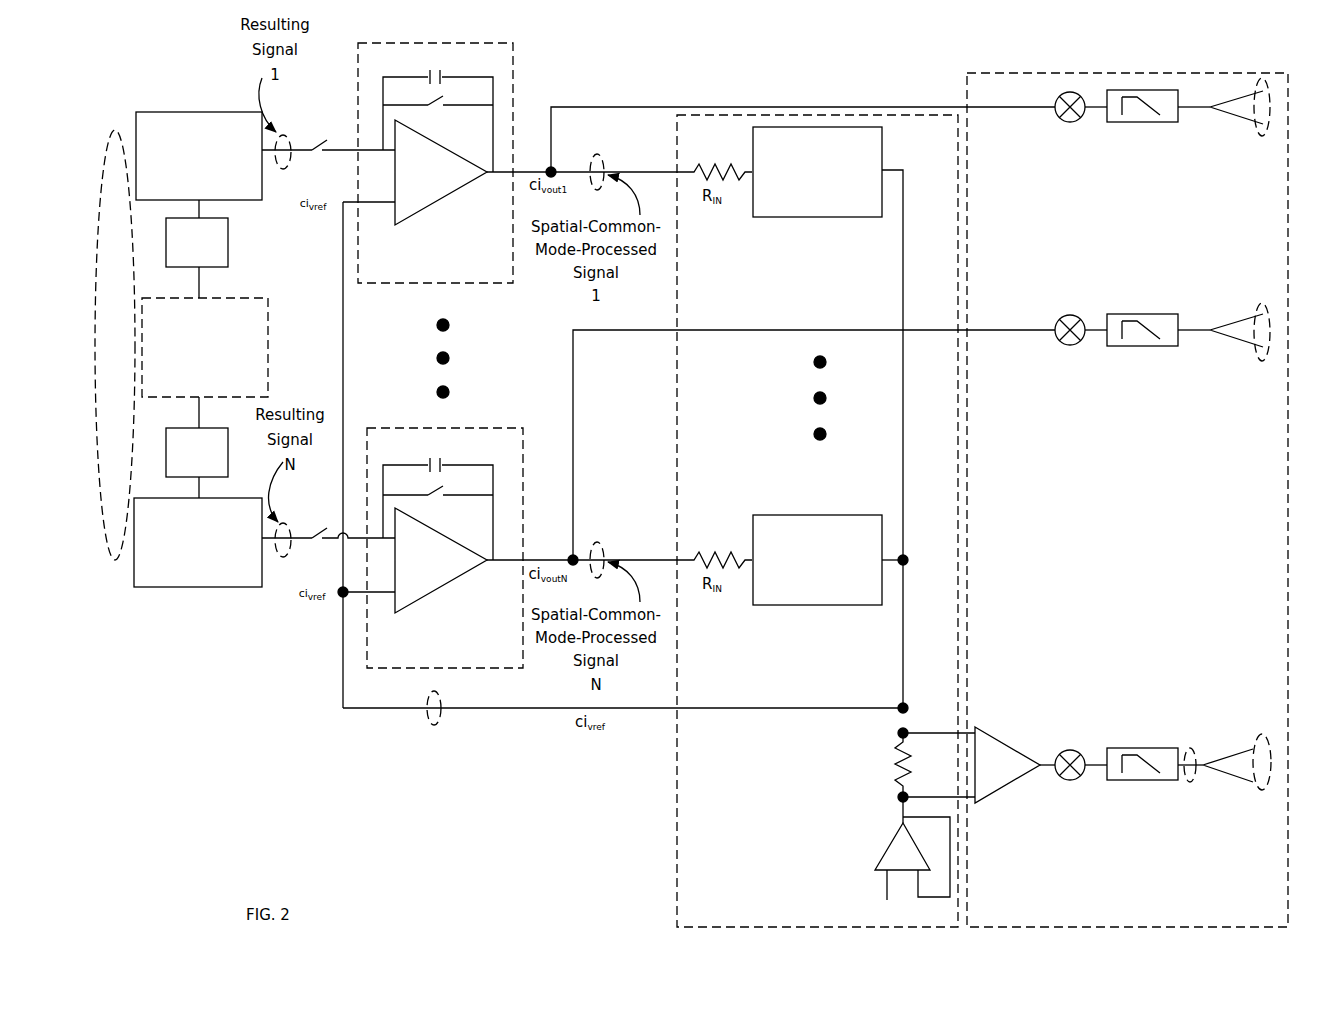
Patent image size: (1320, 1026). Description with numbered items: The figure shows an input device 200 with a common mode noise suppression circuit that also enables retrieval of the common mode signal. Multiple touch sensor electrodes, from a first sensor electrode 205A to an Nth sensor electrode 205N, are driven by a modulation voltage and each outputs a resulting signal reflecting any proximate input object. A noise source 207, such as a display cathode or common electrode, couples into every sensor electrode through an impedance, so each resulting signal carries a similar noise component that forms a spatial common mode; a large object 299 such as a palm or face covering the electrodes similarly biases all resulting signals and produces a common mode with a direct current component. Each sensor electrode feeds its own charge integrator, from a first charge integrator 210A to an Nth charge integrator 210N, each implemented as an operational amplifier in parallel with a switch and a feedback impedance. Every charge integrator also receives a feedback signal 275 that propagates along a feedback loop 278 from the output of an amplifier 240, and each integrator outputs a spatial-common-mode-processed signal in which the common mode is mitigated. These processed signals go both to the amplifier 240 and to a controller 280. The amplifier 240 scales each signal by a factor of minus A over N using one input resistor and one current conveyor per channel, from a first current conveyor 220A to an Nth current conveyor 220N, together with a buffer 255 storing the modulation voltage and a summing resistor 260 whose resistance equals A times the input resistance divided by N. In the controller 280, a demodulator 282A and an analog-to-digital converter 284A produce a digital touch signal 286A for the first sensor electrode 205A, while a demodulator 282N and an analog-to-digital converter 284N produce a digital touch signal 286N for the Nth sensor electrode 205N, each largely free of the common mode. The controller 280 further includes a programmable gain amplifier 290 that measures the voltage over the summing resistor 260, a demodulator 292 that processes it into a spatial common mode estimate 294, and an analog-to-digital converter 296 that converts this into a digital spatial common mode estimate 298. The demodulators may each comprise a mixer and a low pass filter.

The input device 200 is at (150, 86).
The large object 299 is at (115, 345).
The sensor electrode 1 205A is at (199, 156).
The sensor electrode N 205N is at (198, 542).
The noise source 207 is at (205, 347).
The charge integrator 1 210A is at (435, 163).
The charge integrator N 210N is at (445, 548).
The current conveyor 1 220A is at (817, 172).
The current conveyor N 220N is at (817, 560).
The amplifier 240 is at (802, 521).
The buffer 255 is at (888, 836).
The summing resistor 260 is at (895, 745).
The feedback signal 275 is at (448, 718).
The feedback loop 278 is at (338, 685).
The controller 280 is at (1110, 500).
The demodulator 282A is at (1070, 128).
The demodulator 282N is at (1072, 352).
The analog-to-digital converter 284A is at (1222, 128).
The analog-to-digital converter 284N is at (1222, 352).
The digital touch signal 286A is at (1258, 82).
The digital touch signal 286N is at (1258, 306).
The programmable gain amplifier 290 is at (998, 727).
The demodulator 292 is at (1096, 796).
The spatial common mode estimate 294 is at (1184, 750).
The analog-to-digital converter 296 is at (1224, 750).
The digital spatial common mode estimate 298 is at (1268, 800).